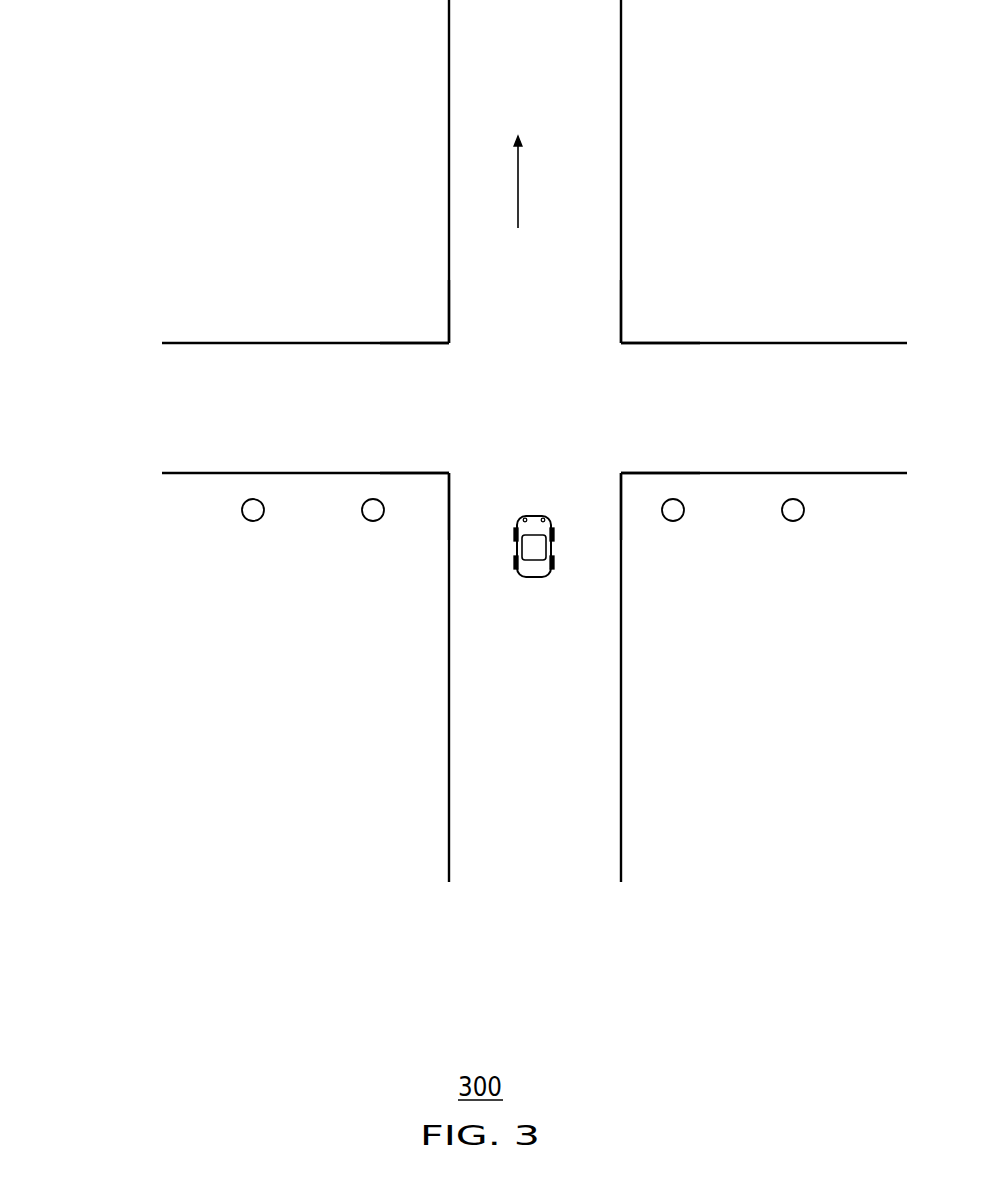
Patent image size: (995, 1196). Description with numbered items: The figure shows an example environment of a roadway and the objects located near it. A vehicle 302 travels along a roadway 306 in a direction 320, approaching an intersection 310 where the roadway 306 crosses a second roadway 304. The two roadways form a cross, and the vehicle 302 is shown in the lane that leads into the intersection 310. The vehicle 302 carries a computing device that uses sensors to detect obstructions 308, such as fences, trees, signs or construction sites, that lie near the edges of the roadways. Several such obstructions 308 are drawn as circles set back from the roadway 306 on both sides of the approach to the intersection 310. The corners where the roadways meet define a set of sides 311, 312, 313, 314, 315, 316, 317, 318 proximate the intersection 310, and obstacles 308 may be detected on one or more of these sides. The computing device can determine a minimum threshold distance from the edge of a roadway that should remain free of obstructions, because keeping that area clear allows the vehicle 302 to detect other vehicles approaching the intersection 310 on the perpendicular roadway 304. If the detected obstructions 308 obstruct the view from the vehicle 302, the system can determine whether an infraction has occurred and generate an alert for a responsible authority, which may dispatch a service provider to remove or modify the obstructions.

The vehicle 302 is at (533, 580).
The roadway 304 is at (181, 402).
The roadway 306 is at (511, 870).
The obstructions 308 is at (253, 521).
The intersection 310 is at (563, 428).
The side 311 is at (392, 473).
The side 312 is at (449, 505).
The side 313 is at (664, 473).
The side 314 is at (621, 505).
The side 315 is at (404, 344).
The side 316 is at (449, 322).
The side 317 is at (672, 344).
The side 318 is at (621, 325).
The direction 320 is at (523, 180).